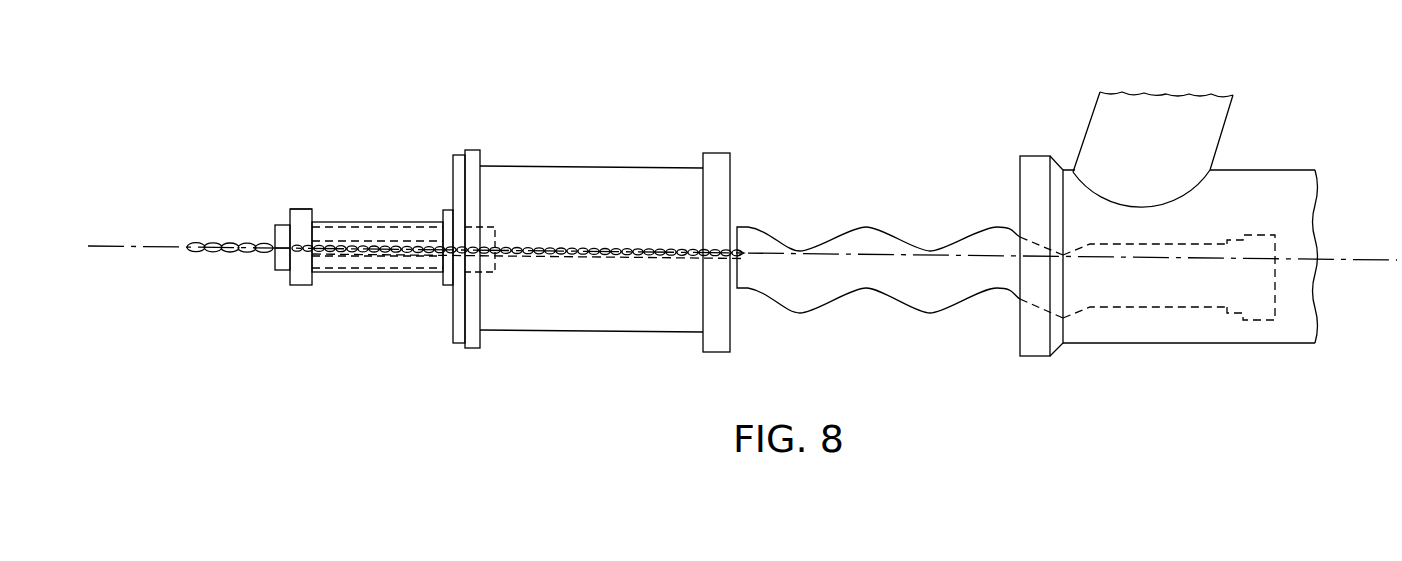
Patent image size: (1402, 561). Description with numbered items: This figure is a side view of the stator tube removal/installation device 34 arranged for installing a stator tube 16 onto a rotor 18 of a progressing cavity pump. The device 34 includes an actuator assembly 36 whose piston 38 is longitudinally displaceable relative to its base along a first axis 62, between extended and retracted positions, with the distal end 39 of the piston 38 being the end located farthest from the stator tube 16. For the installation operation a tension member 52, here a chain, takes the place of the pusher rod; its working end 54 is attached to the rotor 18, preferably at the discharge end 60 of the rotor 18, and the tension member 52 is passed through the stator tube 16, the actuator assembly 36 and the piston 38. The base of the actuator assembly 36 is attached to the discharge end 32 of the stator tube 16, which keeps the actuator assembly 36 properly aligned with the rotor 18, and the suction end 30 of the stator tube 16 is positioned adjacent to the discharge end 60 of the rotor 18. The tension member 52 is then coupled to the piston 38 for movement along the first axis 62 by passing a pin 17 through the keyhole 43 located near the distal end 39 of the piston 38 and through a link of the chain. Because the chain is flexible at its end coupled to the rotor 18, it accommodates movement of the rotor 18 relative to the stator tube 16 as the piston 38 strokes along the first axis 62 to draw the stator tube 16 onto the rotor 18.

The first axis 62 is at (150, 262).
The tension member 52 is at (218, 241).
The keyhole 43 is at (273, 233).
The pin 17 is at (275, 256).
The distal end 39 is at (284, 225).
The piston 38 is at (287, 274).
The actuator assembly 36 is at (365, 222).
The stator tube removal/installation device 34 is at (385, 178).
The discharge end 32 is at (456, 126).
The stator tube 16 is at (636, 168).
The suction end 30 is at (721, 152).
The working end 54 is at (749, 228).
The discharge end 60 is at (740, 283).
The rotor 18 is at (811, 316).